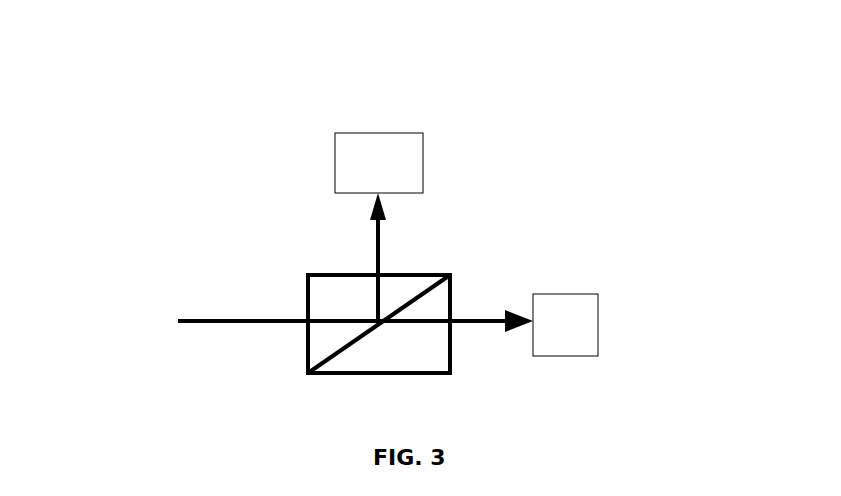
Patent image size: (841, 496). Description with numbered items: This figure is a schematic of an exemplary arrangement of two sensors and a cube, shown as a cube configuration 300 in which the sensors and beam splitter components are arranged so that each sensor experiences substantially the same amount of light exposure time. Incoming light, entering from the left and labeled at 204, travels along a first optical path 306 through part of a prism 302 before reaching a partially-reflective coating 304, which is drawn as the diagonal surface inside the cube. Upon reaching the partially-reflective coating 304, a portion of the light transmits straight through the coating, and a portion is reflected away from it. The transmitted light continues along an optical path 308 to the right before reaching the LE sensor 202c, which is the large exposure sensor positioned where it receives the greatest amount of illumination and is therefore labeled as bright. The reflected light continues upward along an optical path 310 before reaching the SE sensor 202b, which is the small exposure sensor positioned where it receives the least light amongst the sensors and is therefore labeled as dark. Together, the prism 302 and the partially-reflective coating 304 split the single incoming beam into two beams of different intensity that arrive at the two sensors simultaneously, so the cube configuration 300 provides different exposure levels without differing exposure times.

The cube configuration 300 is at (123, 113).
The SE sensor 202b is at (423, 163).
The LE sensor 202c is at (598, 323).
The light source 204 is at (188, 325).
The prism 302 is at (307, 343).
The partially-reflective coating 304 is at (340, 352).
The first optical path 306 is at (378, 320).
The optical path 308 is at (379, 330).
The optical path 310 is at (382, 193).